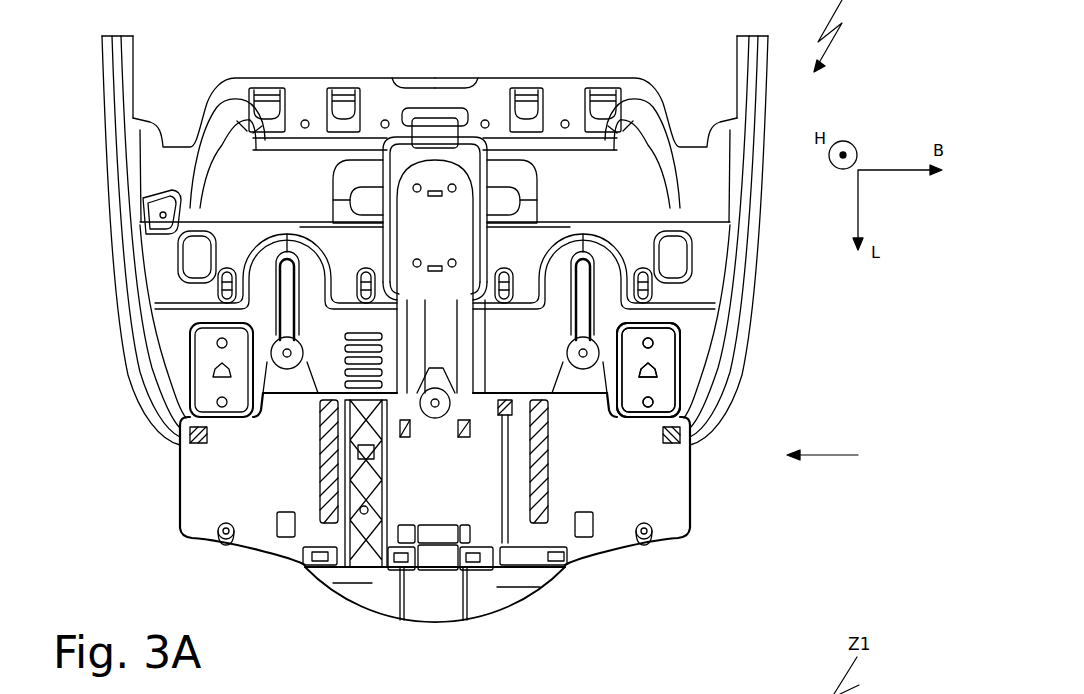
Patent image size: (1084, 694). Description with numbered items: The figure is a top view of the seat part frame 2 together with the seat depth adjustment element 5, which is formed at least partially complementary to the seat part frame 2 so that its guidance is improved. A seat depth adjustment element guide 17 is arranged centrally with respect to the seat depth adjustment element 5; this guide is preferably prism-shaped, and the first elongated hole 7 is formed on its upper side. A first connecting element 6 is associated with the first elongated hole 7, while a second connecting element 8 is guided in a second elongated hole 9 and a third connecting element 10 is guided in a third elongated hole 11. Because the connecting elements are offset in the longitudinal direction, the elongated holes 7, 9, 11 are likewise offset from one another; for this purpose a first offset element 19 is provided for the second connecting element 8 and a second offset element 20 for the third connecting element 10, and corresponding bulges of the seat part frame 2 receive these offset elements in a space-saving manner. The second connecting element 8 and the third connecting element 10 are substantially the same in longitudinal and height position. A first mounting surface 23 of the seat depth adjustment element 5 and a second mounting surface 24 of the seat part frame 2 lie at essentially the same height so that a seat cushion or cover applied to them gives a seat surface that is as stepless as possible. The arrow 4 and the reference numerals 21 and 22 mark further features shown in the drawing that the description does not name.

The seat part frame 2 is at (750, 278).
The direction of travel arrow 4 is at (833, 456).
The seat depth adjustment element 5 is at (660, 510).
The first connecting element 6 is at (437, 410).
The first elongated hole 7 is at (487, 240).
The second connecting element 8 is at (291, 366).
The second elongated hole 9 is at (292, 320).
The third connecting element 10 is at (640, 364).
The third elongated hole 11 is at (612, 258).
The seat depth adjustment element guide 17 is at (358, 98).
The first offset element 19 is at (268, 378).
The second offset element 20 is at (593, 378).
The left arm frame 21 is at (265, 242).
The right hook slot 22 is at (584, 268).
The first mounting surface 23 is at (200, 488).
The second mounting surface 24 is at (232, 226).